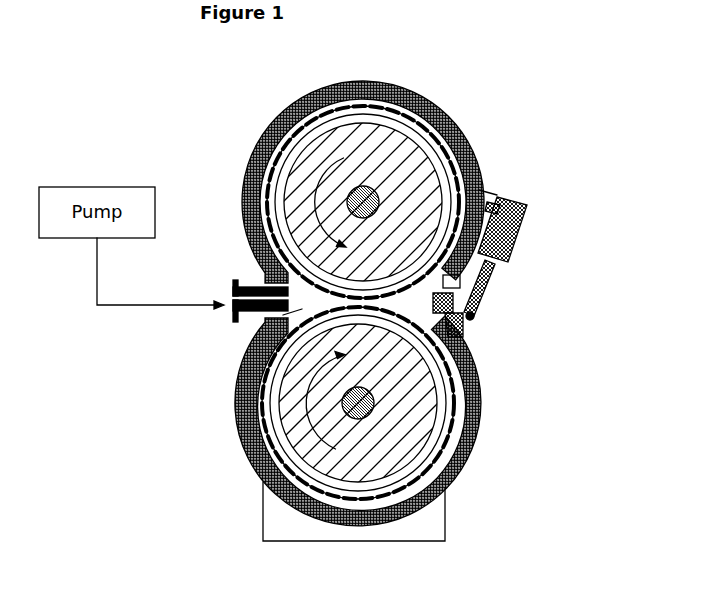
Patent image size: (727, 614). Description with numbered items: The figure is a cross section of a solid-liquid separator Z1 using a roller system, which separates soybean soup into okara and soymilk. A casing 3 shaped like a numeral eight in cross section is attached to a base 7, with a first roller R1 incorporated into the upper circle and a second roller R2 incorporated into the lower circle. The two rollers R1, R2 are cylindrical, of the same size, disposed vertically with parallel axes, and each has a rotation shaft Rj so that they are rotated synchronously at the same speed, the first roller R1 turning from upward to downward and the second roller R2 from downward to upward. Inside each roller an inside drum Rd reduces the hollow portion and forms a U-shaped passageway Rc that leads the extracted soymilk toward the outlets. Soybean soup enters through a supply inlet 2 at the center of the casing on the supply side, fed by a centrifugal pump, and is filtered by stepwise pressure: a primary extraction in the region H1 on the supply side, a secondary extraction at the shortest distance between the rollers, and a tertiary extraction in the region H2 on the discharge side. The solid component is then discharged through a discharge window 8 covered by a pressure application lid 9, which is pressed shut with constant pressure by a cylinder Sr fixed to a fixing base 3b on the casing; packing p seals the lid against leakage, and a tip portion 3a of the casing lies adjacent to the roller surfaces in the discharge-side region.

The solid-liquid separator Z1 is at (480, 90).
The casing 3 is at (257, 153).
The tip portion of the casing 3a is at (476, 165).
The fixing base 3b is at (497, 187).
The first roller R1 is at (402, 107).
The second roller R2 is at (282, 472).
The passageway Rc is at (278, 197).
The inside drum Rd is at (307, 163).
The rotation shaft Rj is at (374, 188).
The supply inlet 2 is at (233, 288).
The prescribed region on the supply side H1 is at (258, 333).
The prescribed region on the discharge side H2 is at (515, 235).
The cylinder Sr is at (500, 196).
The packing p is at (487, 307).
The pressure application lid 9 is at (473, 315).
The discharge window 8 is at (472, 319).
The base 7 is at (445, 523).